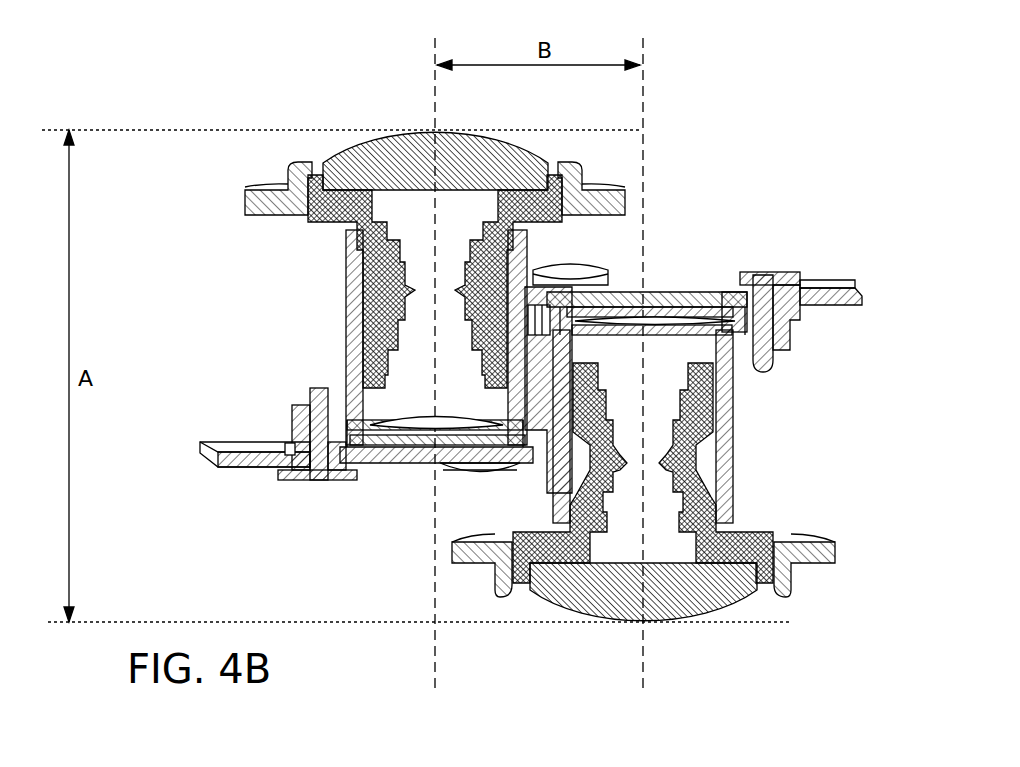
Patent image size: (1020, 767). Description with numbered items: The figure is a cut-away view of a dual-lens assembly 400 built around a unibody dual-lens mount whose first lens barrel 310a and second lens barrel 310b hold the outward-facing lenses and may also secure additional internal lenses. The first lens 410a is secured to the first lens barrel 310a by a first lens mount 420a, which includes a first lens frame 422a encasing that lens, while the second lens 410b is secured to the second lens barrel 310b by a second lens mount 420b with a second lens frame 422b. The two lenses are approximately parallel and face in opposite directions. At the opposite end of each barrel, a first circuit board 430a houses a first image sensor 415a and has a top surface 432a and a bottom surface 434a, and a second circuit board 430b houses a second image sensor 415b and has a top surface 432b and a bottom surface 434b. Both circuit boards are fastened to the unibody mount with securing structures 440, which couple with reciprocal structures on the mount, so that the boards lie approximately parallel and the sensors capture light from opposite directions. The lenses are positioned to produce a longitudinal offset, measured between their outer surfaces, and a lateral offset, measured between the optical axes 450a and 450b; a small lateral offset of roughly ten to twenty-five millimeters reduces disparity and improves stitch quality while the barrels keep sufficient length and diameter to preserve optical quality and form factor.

The dual-lens assembly 400 is at (195, 76).
The first lens barrel 310a is at (345, 320).
The second lens barrel 310b is at (735, 440).
The first lens 410a is at (362, 135).
The second lens 410b is at (703, 600).
The first image sensor 415a is at (388, 455).
The second image sensor 415b is at (690, 304).
The first lens mount 420a is at (320, 226).
The second lens mount 420b is at (740, 535).
The first lens frame 422a is at (248, 200).
The second lens frame 422b is at (840, 552).
The first circuit board 430a is at (205, 450).
The second circuit board 430b is at (865, 294).
The top surface 432a is at (245, 445).
The top surface 432b is at (823, 307).
The bottom surface 434a is at (225, 468).
The bottom surface 434b is at (830, 283).
The securing structures 440 is at (562, 266).
The optical axis 450a is at (467, 364).
The optical axis 450b is at (679, 364).